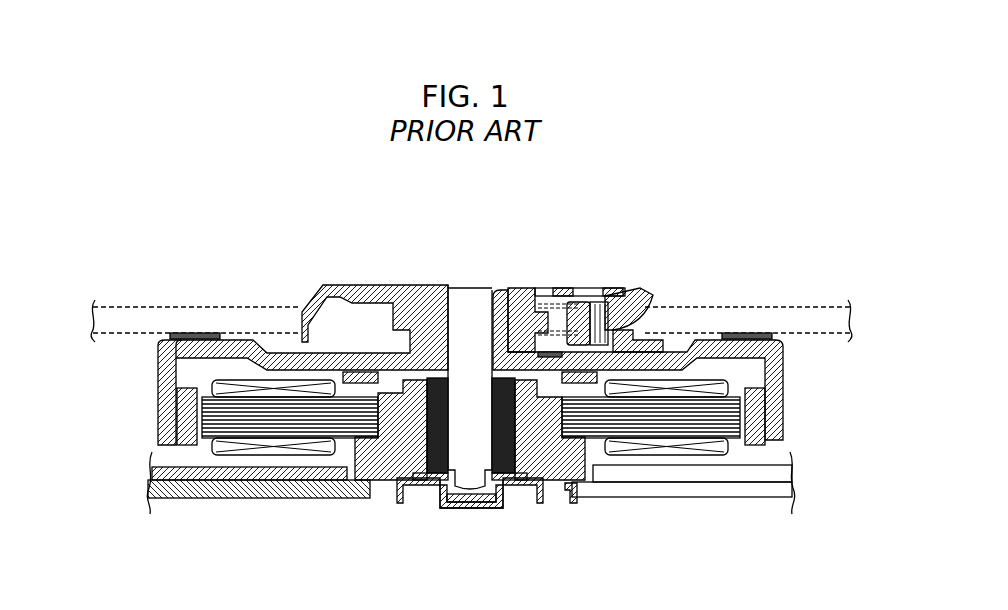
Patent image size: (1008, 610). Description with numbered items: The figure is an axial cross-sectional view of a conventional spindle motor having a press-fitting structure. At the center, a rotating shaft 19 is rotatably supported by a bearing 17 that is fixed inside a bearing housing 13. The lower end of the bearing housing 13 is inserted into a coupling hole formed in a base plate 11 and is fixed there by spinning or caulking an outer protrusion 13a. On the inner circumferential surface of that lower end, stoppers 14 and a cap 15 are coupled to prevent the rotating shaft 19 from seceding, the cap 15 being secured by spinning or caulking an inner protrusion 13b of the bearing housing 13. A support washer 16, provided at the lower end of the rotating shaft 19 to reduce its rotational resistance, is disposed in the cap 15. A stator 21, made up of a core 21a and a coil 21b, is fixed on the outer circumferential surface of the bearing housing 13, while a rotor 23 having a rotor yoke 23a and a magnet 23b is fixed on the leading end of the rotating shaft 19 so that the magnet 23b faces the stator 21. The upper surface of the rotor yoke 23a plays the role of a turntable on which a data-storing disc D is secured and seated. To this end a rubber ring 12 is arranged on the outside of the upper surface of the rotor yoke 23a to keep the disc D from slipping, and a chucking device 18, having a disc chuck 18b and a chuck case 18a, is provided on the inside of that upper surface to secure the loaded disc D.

The disc D is at (173, 320).
The base plate 11 is at (220, 494).
The rubber ring 12 is at (743, 333).
The bearing housing 13 is at (387, 457).
The outer protrusion 13a is at (577, 503).
The inner protrusion 13b is at (543, 497).
The stoppers 14 is at (427, 487).
The cap 15 is at (490, 507).
The support washer 16 is at (457, 508).
The bearing 17 is at (430, 378).
The chucking device 18 is at (585, 276).
The chuck case 18a is at (527, 300).
The disc chuck 18b is at (628, 305).
The rotating shaft 19 is at (471, 320).
The stator 21 is at (843, 372).
The core 21a is at (730, 410).
The coil 21b is at (723, 390).
The rotor 23 is at (90, 367).
The rotor yoke 23a is at (162, 372).
The magnet 23b is at (178, 414).